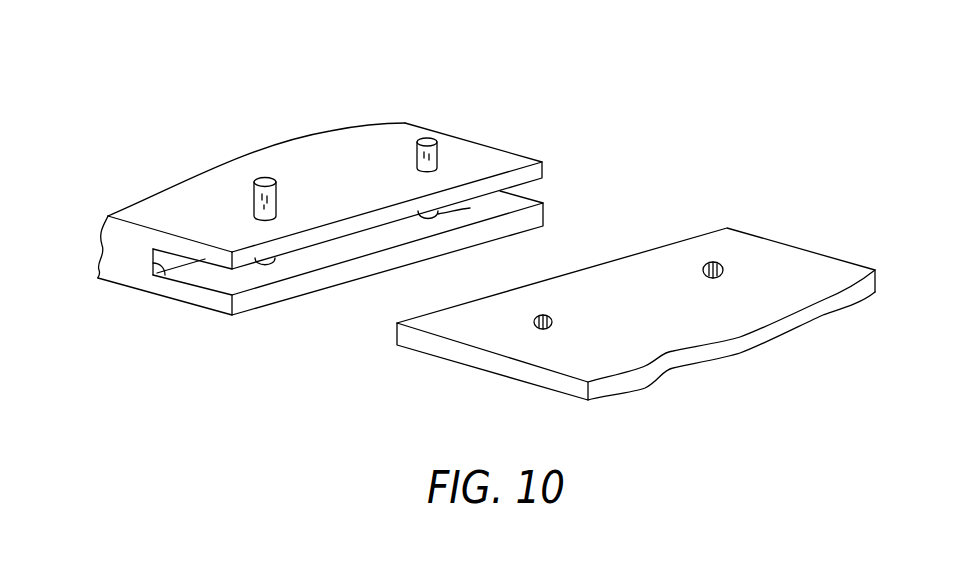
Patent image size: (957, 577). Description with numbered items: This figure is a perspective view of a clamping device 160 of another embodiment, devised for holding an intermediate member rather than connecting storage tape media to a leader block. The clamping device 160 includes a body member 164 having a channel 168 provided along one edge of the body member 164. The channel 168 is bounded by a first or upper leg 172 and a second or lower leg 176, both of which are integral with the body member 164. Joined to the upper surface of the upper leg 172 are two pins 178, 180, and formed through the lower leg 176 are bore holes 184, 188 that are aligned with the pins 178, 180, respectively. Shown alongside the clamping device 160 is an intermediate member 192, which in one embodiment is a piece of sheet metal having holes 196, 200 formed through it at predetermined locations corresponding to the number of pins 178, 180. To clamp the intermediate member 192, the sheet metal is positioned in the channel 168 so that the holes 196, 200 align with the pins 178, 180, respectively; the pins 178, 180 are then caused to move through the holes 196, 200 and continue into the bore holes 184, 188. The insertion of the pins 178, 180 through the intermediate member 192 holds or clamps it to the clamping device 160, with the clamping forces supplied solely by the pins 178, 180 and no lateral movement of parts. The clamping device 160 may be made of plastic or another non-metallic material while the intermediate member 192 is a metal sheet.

The clamping device 160 is at (538, 113).
The body member 164 is at (113, 258).
The channel 168 is at (162, 272).
The first leg 172 is at (220, 258).
The second leg 176 is at (185, 295).
The pin 178 is at (257, 185).
The pin 180 is at (433, 137).
The bore hole 184 is at (268, 265).
The bore hole 188 is at (524, 196).
The intermediate member 192 is at (818, 270).
The hole 196 is at (538, 315).
The hole 200 is at (717, 262).